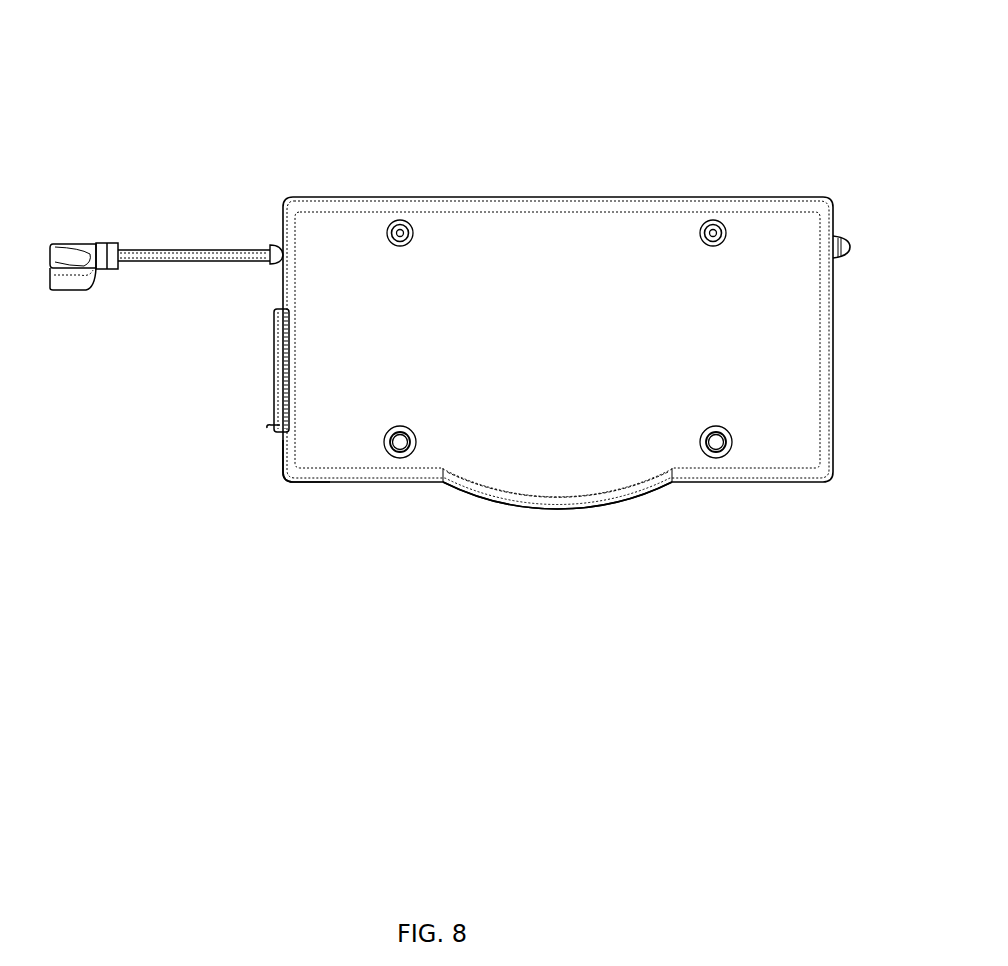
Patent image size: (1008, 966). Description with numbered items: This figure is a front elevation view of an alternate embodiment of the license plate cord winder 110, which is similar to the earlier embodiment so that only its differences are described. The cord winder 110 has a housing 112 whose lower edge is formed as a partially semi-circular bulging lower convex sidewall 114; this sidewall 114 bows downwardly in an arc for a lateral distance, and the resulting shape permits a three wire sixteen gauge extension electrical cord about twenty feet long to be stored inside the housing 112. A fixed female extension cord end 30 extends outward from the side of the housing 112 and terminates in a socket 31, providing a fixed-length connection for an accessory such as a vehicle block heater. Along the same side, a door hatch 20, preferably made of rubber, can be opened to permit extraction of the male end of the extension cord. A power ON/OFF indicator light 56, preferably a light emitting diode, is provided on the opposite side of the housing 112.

The license plate cord winder 110 is at (455, 126).
The door hatch 20 is at (272, 355).
The female extension cord end 30 is at (196, 252).
The socket 31 is at (79, 245).
The power ON/OFF indicator light 56 is at (846, 240).
The housing 112 is at (282, 452).
The lower convex sidewall 114 is at (582, 511).